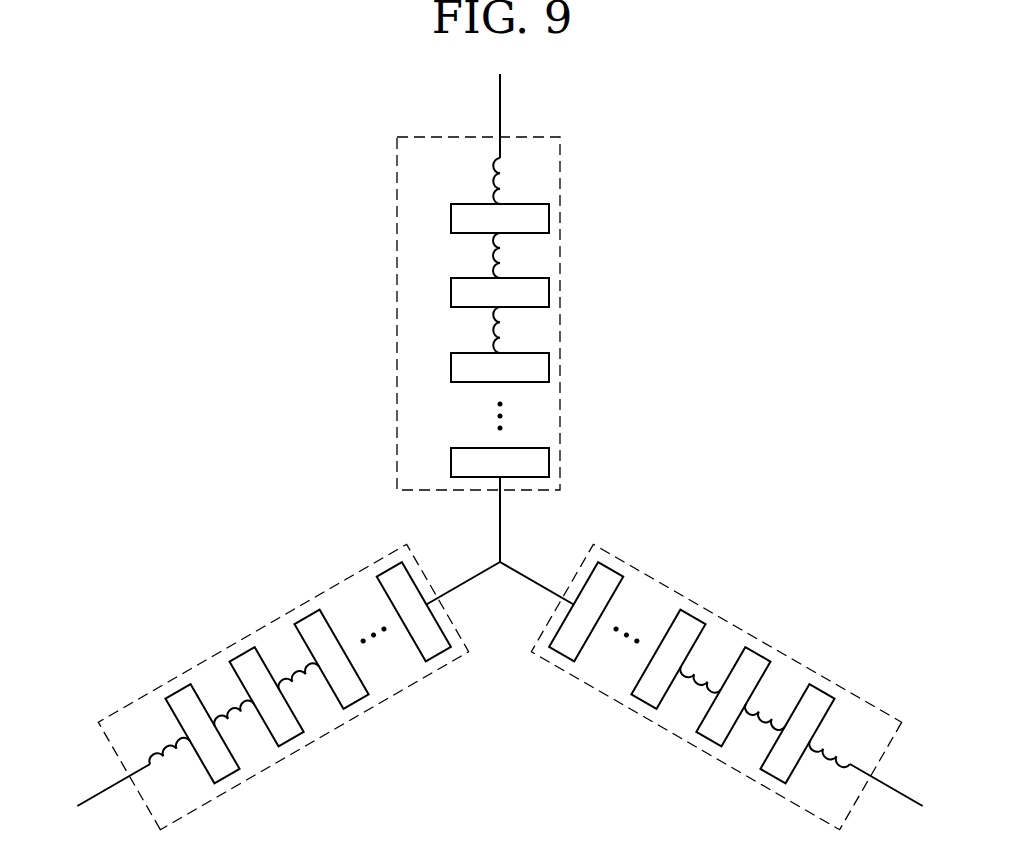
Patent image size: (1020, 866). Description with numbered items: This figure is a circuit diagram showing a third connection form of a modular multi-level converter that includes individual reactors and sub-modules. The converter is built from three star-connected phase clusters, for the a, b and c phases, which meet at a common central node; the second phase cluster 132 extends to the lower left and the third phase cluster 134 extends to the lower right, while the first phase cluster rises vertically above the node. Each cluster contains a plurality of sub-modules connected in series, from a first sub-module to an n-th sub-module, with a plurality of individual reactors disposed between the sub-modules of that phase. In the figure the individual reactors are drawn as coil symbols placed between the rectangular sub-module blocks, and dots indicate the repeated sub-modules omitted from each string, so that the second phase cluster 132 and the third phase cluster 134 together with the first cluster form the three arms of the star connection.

The second phase cluster 132 is at (275, 620).
The third phase cluster 134 is at (738, 628).